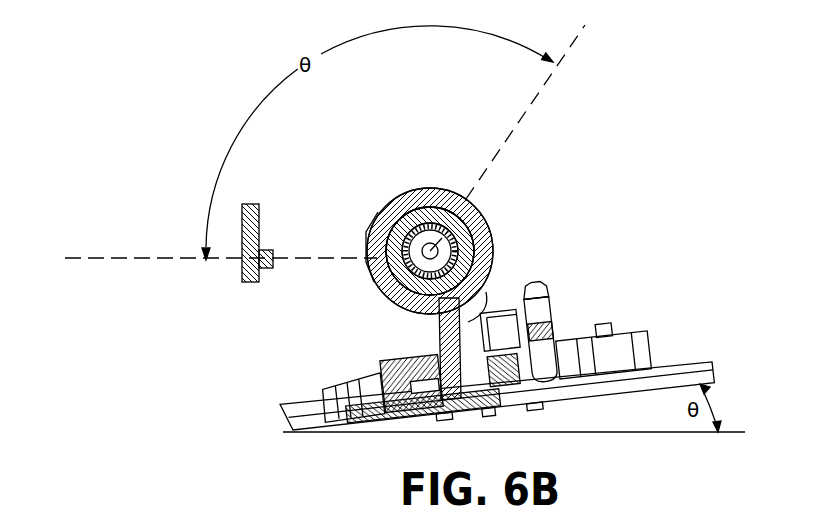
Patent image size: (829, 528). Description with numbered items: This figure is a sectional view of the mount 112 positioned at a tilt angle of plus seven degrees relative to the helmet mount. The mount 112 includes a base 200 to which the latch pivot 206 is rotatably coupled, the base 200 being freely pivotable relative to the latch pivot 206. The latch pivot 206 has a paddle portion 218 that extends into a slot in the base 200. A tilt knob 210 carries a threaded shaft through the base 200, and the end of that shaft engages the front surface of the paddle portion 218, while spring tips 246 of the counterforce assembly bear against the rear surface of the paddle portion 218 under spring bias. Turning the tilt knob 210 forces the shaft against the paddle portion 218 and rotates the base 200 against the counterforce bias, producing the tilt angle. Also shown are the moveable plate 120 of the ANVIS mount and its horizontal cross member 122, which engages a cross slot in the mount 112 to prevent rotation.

The mount 112 is at (648, 198).
The moveable plate 120 is at (242, 262).
The horizontal cross member 122 is at (268, 267).
The base 200 is at (466, 326).
The latch pivot 206 is at (378, 192).
The tilt knob 210 is at (532, 287).
The paddle portion 218 is at (443, 342).
The spring tip 246 is at (438, 358).